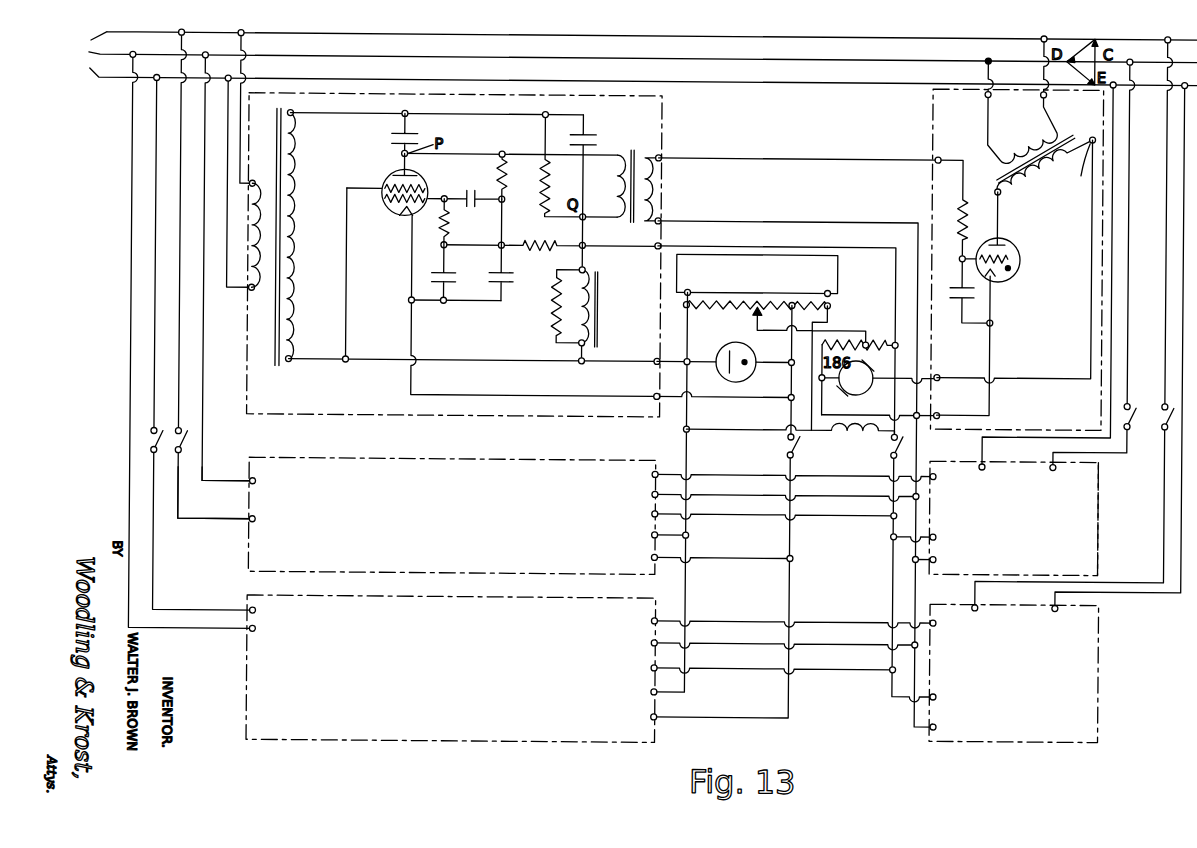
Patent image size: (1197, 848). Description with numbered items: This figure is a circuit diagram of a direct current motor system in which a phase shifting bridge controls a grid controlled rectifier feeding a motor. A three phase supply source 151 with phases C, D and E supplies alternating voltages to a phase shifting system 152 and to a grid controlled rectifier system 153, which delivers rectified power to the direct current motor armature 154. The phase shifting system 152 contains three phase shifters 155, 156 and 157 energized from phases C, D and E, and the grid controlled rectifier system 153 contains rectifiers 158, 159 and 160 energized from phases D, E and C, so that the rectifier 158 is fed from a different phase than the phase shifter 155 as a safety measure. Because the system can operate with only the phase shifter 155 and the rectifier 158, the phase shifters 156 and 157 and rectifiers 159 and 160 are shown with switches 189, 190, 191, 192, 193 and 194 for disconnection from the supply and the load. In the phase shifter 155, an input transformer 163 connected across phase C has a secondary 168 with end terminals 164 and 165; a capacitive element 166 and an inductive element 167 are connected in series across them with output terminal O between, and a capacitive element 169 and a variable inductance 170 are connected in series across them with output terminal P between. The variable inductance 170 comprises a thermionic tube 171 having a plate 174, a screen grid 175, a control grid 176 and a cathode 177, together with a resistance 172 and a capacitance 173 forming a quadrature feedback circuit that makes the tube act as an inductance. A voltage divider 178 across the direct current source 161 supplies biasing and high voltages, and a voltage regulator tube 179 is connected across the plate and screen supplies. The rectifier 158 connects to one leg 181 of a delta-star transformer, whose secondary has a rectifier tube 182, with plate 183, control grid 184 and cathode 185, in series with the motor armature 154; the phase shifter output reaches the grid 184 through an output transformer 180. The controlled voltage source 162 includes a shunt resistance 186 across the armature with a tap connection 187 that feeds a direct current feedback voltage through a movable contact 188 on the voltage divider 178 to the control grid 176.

The three phase supply source 151 is at (90, 60).
The phase shifting system 152 is at (237, 507).
The grid controlled rectifier system 153 is at (1139, 524).
The direct current motor armature 154 is at (855, 393).
The phase shifter 155 is at (387, 317).
The phase shifter 156 is at (457, 533).
The phase shifter 157 is at (456, 672).
The rectifier 158 is at (1052, 341).
The rectifier 159 is at (1024, 529).
The rectifier 160 is at (1024, 679).
The direct current source 161 is at (838, 262).
The controlled voltage source 162 is at (872, 320).
The input transformer 163 is at (297, 228).
The end terminal 164 is at (291, 118).
The end terminal 165 is at (290, 359).
The capacitive element 166 is at (589, 137).
The inductive element 167 is at (598, 330).
The secondary 168 is at (296, 192).
The capacitive element 169 is at (409, 140).
The variable inductance 170 is at (477, 193).
The thermionic tube 171 is at (501, 274).
The resistance 172 is at (502, 165).
The capacitance 173 is at (504, 285).
The plate 174 is at (416, 181).
The screen grid 175 is at (380, 190).
The control grid 176 is at (386, 207).
The cathode 177 is at (408, 219).
The voltage divider 178 is at (830, 304).
The voltage regulator tube 179 is at (748, 375).
The output transformer 180 is at (641, 152).
The transformer leg 181 is at (1083, 111).
The rectifier tube 182 is at (999, 304).
The plate 183 is at (1000, 242).
The control grid 184 is at (1012, 268).
The cathode 185 is at (991, 277).
The shunt resistance 186 is at (790, 429).
The tap connection 187 is at (867, 340).
The movable contact 188 is at (755, 313).
The switch 189 is at (150, 439).
The switch 190 is at (188, 441).
The switch 191 is at (798, 447).
The switch 192 is at (889, 446).
The switch 193 is at (1134, 404).
The switch 194 is at (1170, 426).